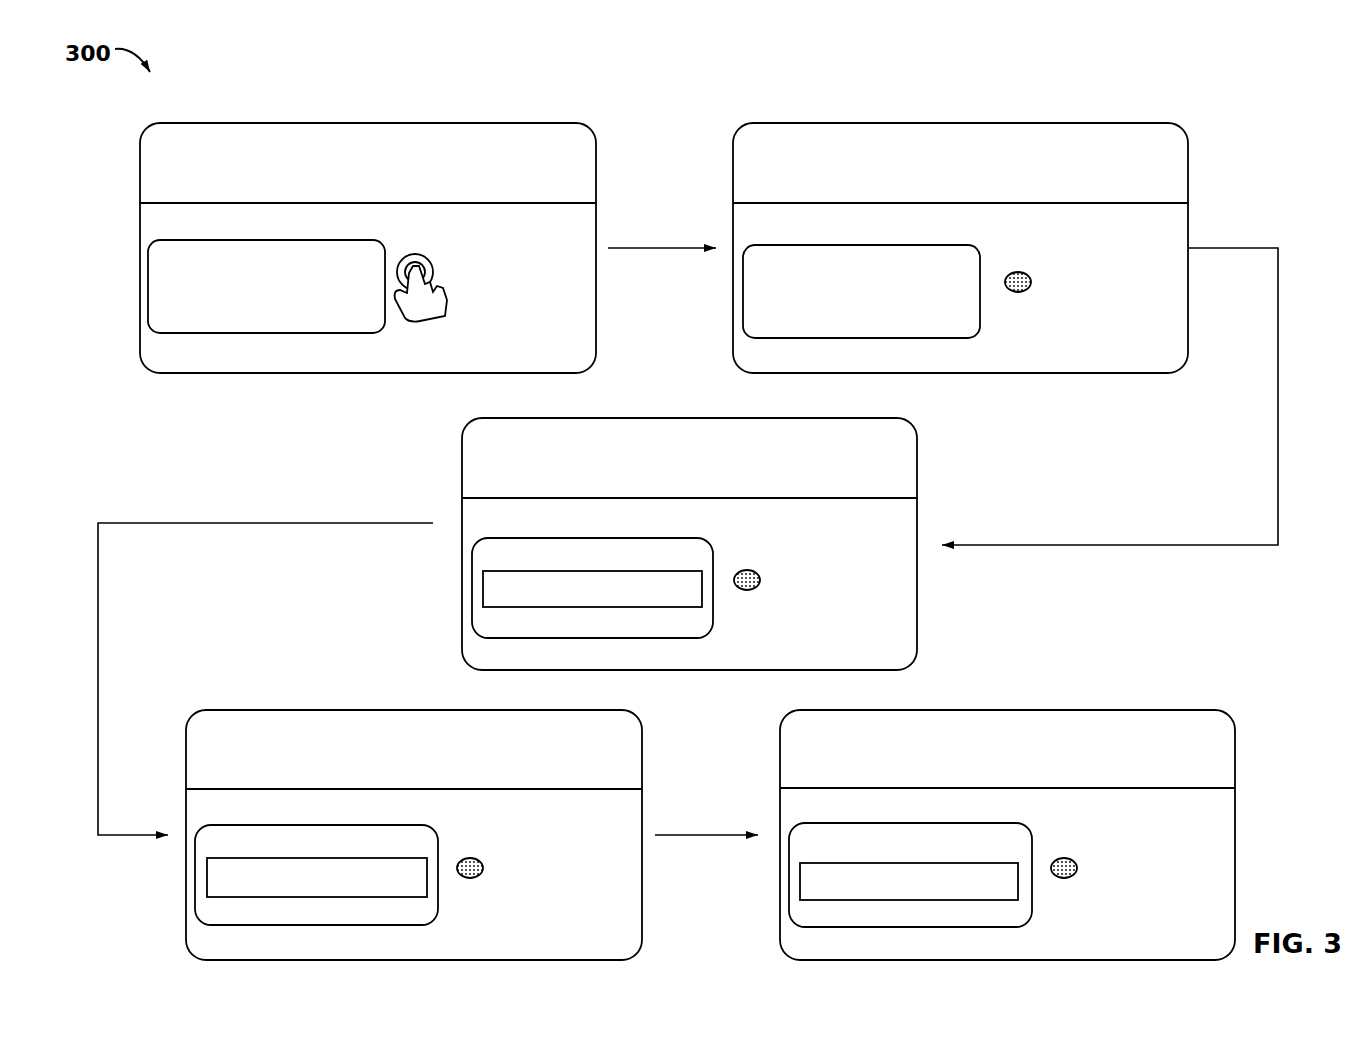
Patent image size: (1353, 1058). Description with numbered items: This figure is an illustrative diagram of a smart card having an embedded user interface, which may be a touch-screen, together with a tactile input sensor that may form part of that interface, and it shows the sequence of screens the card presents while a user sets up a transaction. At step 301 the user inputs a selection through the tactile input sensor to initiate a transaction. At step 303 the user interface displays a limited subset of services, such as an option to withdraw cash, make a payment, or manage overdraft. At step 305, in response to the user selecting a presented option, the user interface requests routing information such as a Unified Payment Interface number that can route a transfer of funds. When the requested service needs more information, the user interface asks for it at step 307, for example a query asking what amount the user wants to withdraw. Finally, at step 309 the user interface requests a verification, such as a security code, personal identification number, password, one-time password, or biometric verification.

The transaction initiation step 301 is at (206, 120).
The services display step 303 is at (796, 120).
The routing information request step 305 is at (525, 415).
The additional information request step 307 is at (250, 707).
The verification request step 309 is at (845, 707).